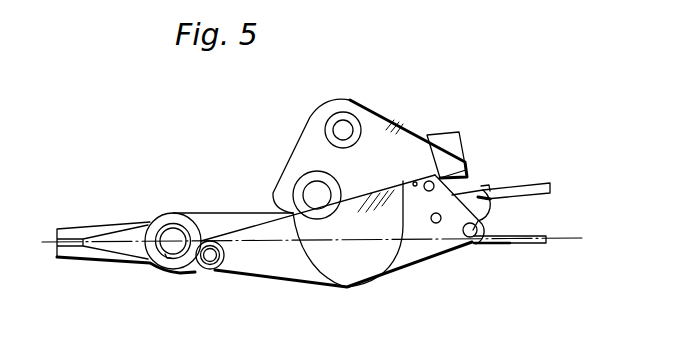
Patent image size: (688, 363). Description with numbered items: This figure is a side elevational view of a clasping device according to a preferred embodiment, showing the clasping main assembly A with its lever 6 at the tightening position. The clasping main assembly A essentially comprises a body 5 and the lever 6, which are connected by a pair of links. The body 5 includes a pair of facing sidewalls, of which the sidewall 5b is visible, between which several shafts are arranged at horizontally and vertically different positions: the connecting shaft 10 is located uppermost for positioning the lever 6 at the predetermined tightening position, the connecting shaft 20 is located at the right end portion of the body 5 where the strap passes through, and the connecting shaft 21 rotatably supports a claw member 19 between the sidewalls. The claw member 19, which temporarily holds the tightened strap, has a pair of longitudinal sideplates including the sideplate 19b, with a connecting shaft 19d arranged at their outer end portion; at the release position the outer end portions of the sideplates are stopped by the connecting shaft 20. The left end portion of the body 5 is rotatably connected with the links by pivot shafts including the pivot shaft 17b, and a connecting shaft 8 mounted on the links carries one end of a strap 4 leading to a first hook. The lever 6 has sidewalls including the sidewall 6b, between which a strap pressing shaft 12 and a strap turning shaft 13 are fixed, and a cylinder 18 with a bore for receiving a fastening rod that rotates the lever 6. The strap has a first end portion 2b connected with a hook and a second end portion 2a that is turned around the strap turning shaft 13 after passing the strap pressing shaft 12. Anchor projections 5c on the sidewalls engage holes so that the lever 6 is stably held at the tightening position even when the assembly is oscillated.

The clasping main assembly A is at (325, 93).
The strap 4 is at (108, 229).
The connecting shaft 8 is at (173, 228).
The pivot shaft 17b is at (239, 223).
The body 5 is at (300, 288).
The sidewall 5b is at (267, 268).
The anchor projection 5c is at (416, 187).
The lever 6 is at (391, 115).
The sidewall 6b is at (397, 173).
The strap turning shaft 13 is at (343, 128).
The strap pressing shaft 12 is at (317, 193).
The cylinder 18 is at (448, 138).
The connecting shaft 10 is at (434, 178).
The claw member 19 is at (486, 178).
The connecting shaft 19d is at (483, 189).
The sideplate 19b is at (483, 210).
The second end portion 2a is at (547, 182).
The first end portion 2b is at (541, 244).
The connecting shaft 20 is at (470, 238).
The connecting shaft 21 is at (437, 223).